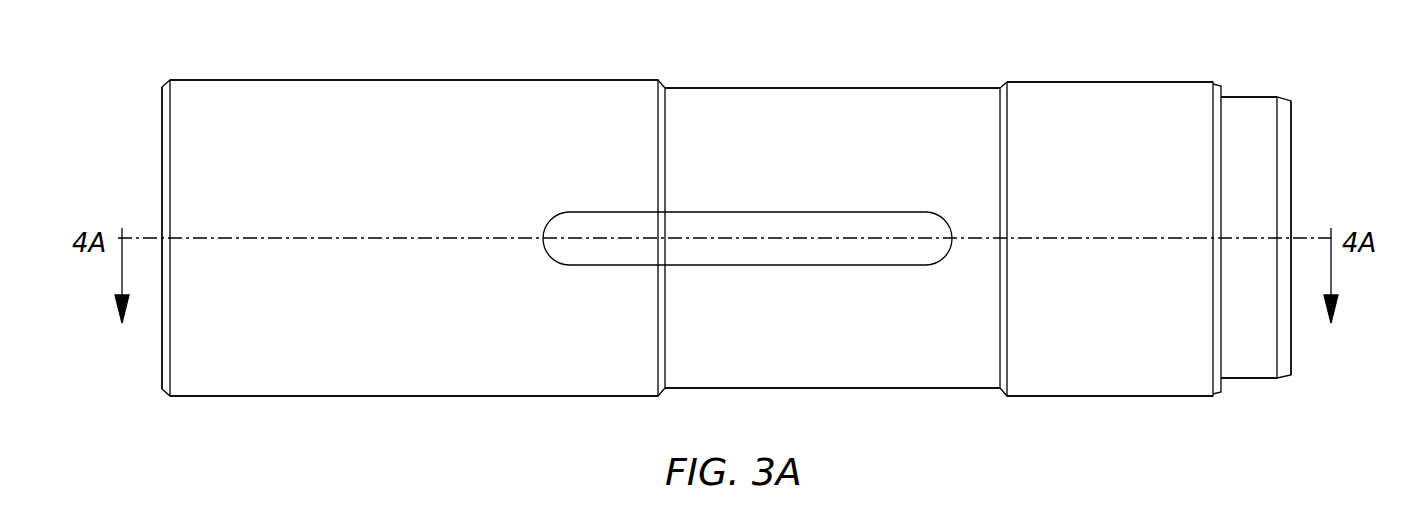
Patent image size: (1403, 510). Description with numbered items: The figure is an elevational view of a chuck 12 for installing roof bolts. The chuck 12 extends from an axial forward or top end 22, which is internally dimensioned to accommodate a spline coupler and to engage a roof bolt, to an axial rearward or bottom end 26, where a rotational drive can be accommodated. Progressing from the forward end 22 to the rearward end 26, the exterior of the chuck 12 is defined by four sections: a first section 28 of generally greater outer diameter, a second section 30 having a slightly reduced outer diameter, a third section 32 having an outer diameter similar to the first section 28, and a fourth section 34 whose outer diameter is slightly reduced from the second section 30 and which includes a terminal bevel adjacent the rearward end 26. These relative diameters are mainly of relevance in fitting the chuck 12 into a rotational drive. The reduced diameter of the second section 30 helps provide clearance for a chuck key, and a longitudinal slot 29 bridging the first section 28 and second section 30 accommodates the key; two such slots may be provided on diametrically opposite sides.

The chuck 12 is at (522, 69).
The forward end 22 is at (162, 112).
The rearward end 26 is at (1291, 345).
The first section 28 is at (362, 107).
The longitudinal slot 29 is at (837, 250).
The second section 30 is at (830, 112).
The third section 32 is at (1125, 106).
The fourth section 34 is at (1248, 120).